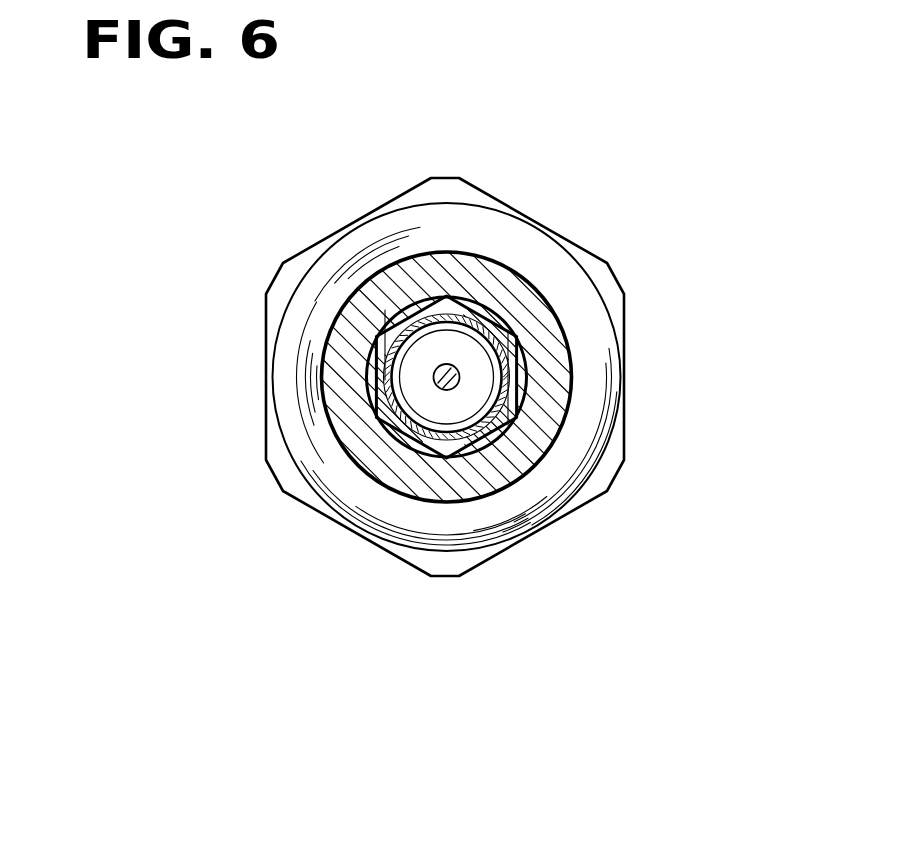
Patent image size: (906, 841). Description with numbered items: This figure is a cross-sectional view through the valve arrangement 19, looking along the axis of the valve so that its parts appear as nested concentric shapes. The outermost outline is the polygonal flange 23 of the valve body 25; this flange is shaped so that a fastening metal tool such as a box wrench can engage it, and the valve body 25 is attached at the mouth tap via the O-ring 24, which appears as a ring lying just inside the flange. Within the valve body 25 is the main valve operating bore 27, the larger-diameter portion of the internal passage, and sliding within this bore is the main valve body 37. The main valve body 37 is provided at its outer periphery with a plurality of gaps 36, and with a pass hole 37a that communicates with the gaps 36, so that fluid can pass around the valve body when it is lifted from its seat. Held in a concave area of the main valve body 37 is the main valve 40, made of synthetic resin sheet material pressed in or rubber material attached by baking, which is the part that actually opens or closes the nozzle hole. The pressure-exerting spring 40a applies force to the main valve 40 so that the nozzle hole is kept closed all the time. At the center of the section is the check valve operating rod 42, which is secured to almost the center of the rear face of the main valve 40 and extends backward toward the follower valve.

The valve arrangement 19 is at (700, 172).
The polygonal flange 23 is at (428, 177).
The O-ring 24 is at (334, 506).
The valve body 25 is at (623, 473).
The main valve operating bore 27 is at (468, 448).
The gap 36 is at (482, 322).
The main valve body 37 is at (510, 415).
The pass hole 37a is at (470, 310).
The main valve 40 is at (517, 377).
The pressure-exerting spring 40a is at (395, 408).
The check valve operating rod 42 is at (436, 367).